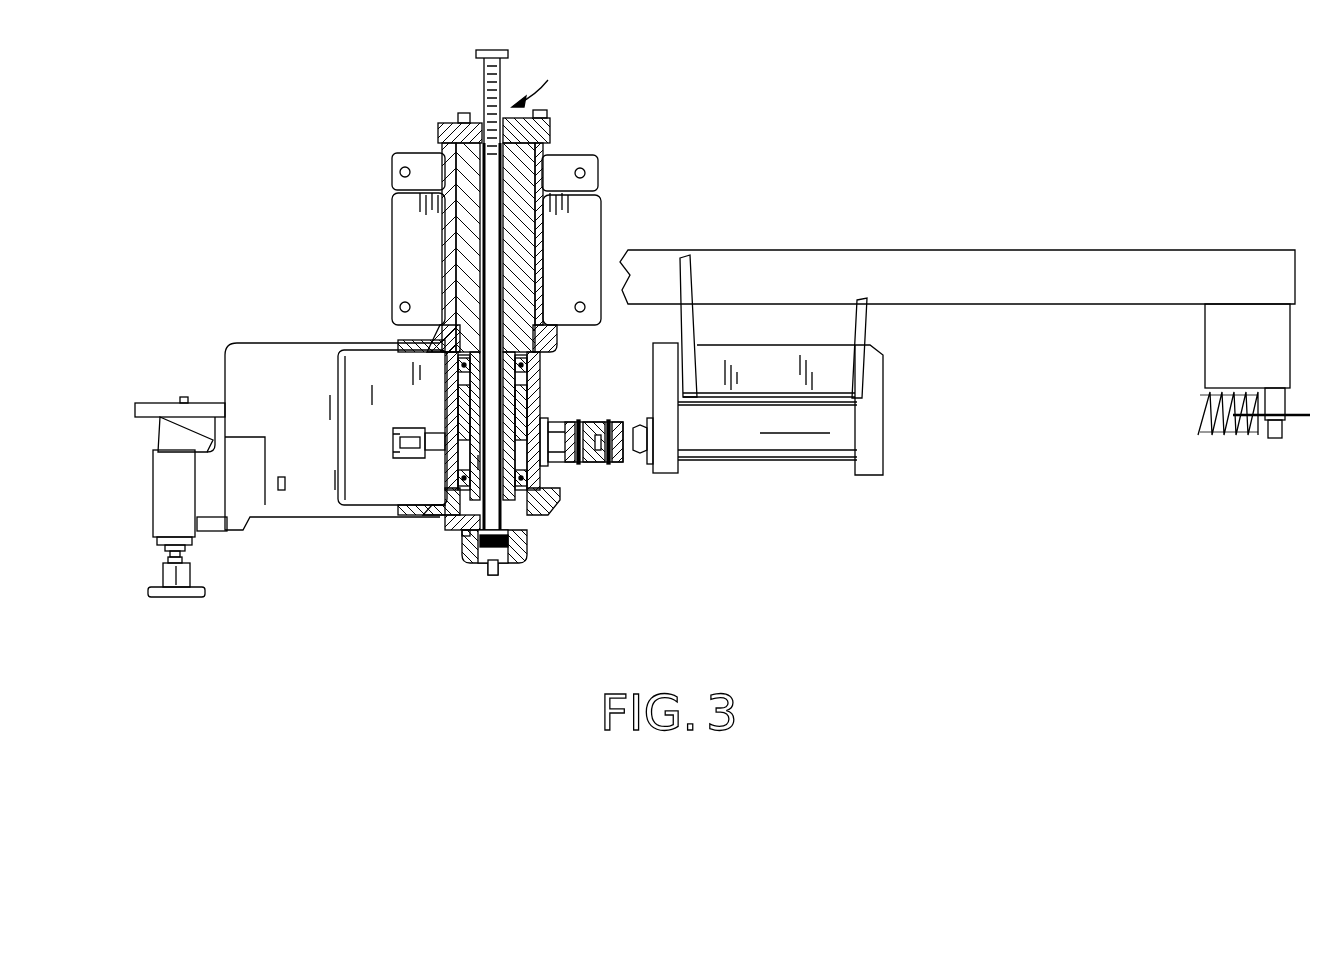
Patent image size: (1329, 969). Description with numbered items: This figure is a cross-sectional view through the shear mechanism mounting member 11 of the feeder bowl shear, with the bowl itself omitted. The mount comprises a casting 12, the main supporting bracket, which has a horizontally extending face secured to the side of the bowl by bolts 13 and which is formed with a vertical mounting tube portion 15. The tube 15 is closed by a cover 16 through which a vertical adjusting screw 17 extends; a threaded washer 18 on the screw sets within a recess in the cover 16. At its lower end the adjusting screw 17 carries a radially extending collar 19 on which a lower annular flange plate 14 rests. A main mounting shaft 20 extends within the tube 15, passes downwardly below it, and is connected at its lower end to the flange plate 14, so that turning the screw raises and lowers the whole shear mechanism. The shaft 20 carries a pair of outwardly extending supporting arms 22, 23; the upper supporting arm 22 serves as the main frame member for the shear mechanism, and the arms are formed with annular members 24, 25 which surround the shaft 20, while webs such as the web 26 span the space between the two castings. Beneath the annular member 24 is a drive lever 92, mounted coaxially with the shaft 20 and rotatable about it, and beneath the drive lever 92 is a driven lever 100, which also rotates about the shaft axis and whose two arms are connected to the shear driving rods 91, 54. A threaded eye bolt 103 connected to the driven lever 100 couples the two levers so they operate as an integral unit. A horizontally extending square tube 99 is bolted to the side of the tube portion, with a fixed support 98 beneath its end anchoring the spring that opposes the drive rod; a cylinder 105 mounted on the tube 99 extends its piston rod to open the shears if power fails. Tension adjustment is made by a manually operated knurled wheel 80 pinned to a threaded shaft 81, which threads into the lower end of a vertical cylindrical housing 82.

The shear mechanism mounting member 11 is at (545, 79).
The casting 12 is at (585, 238).
The bolts 13 is at (398, 168).
The lower annular flange plate 14 is at (520, 525).
The vertical mounting tube portion 15 is at (548, 165).
The cover 16 is at (545, 118).
The vertical adjusting screw 17 is at (505, 80).
The threaded washer 18 is at (462, 113).
The collar 19 is at (472, 545).
The main mounting shaft 20 is at (462, 232).
The upper supporting arm 22 is at (432, 352).
The lower supporting arm 23 is at (400, 512).
The annular member 24 is at (557, 336).
The annular member 25 is at (560, 505).
The web 26 is at (300, 419).
The rod 54 is at (398, 440).
The knurled wheel 80 is at (175, 592).
The threaded shaft 81 is at (185, 555).
The vertical cylindrical housing 82 is at (162, 512).
The rod 91 is at (565, 425).
The drive lever 92 is at (446, 385).
The fixed support 98 is at (1272, 395).
The horizontally extending square tube 99 is at (1272, 282).
The driven lever 100 is at (445, 468).
The threaded eye bolt 103 is at (640, 462).
The cylinder 105 is at (738, 430).